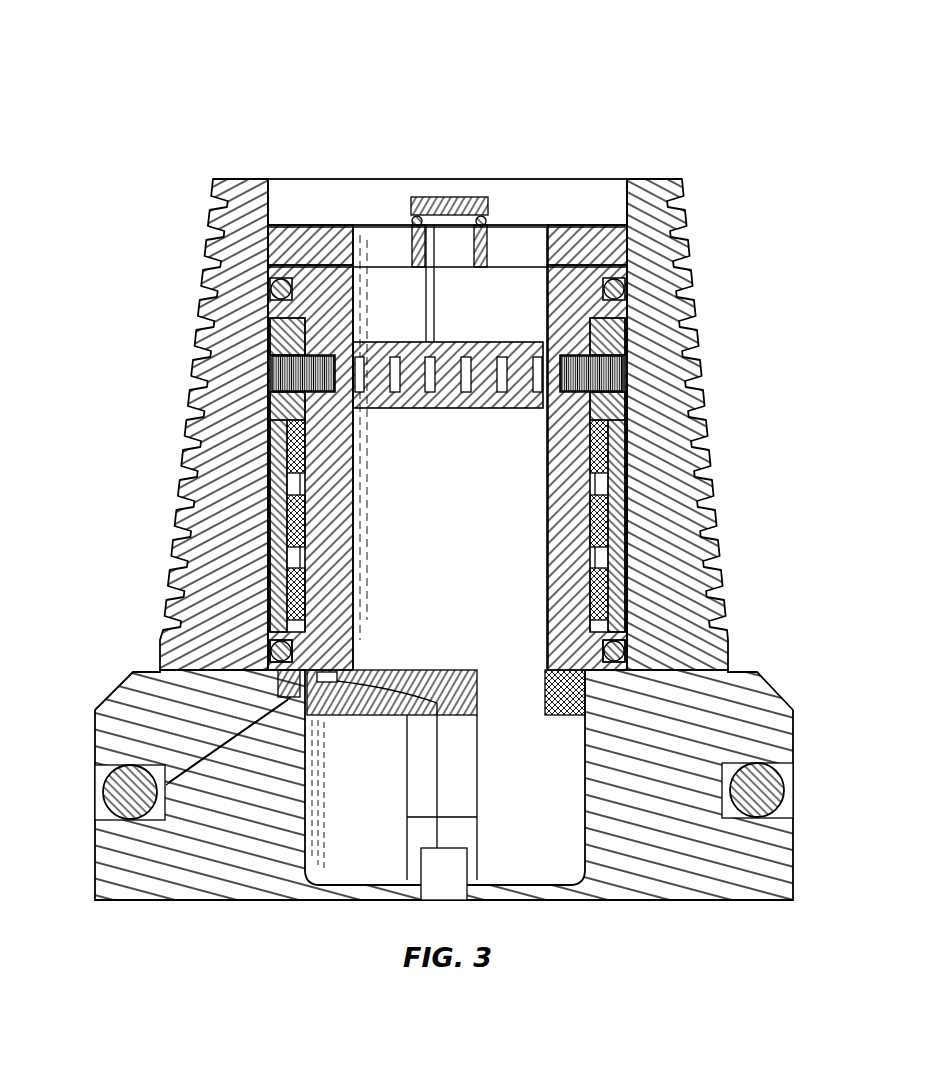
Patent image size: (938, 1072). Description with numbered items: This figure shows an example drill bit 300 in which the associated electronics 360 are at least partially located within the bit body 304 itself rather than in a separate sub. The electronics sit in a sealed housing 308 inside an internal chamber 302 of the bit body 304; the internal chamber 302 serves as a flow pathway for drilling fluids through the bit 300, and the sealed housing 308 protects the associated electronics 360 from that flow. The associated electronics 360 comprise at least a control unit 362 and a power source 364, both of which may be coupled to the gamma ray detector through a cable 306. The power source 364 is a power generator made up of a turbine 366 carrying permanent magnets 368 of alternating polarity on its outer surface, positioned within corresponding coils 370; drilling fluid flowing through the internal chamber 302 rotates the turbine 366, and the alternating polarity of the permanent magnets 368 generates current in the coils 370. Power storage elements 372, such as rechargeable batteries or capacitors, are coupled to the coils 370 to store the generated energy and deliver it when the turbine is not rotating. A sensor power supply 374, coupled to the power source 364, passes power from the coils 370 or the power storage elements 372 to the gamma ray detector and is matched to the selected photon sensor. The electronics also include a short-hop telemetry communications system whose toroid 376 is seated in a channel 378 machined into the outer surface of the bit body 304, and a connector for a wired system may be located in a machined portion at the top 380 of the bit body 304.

The drill bit 300 is at (134, 110).
The internal chamber 302 is at (267, 208).
The bit body 304 is at (722, 703).
The cable 306 is at (447, 840).
The sealed housing 308 is at (628, 650).
The associated electronics 360 is at (650, 424).
The control unit 362 is at (268, 544).
The power source 364 is at (546, 361).
The turbine 366 is at (493, 341).
The permanent magnets 368 is at (503, 394).
The coils 370 is at (272, 366).
The power storage elements 372 is at (612, 458).
The sensor power supply 374 is at (628, 528).
The toroid 376 is at (103, 793).
The channel 378 is at (110, 820).
The top of the bit body 380 is at (598, 178).